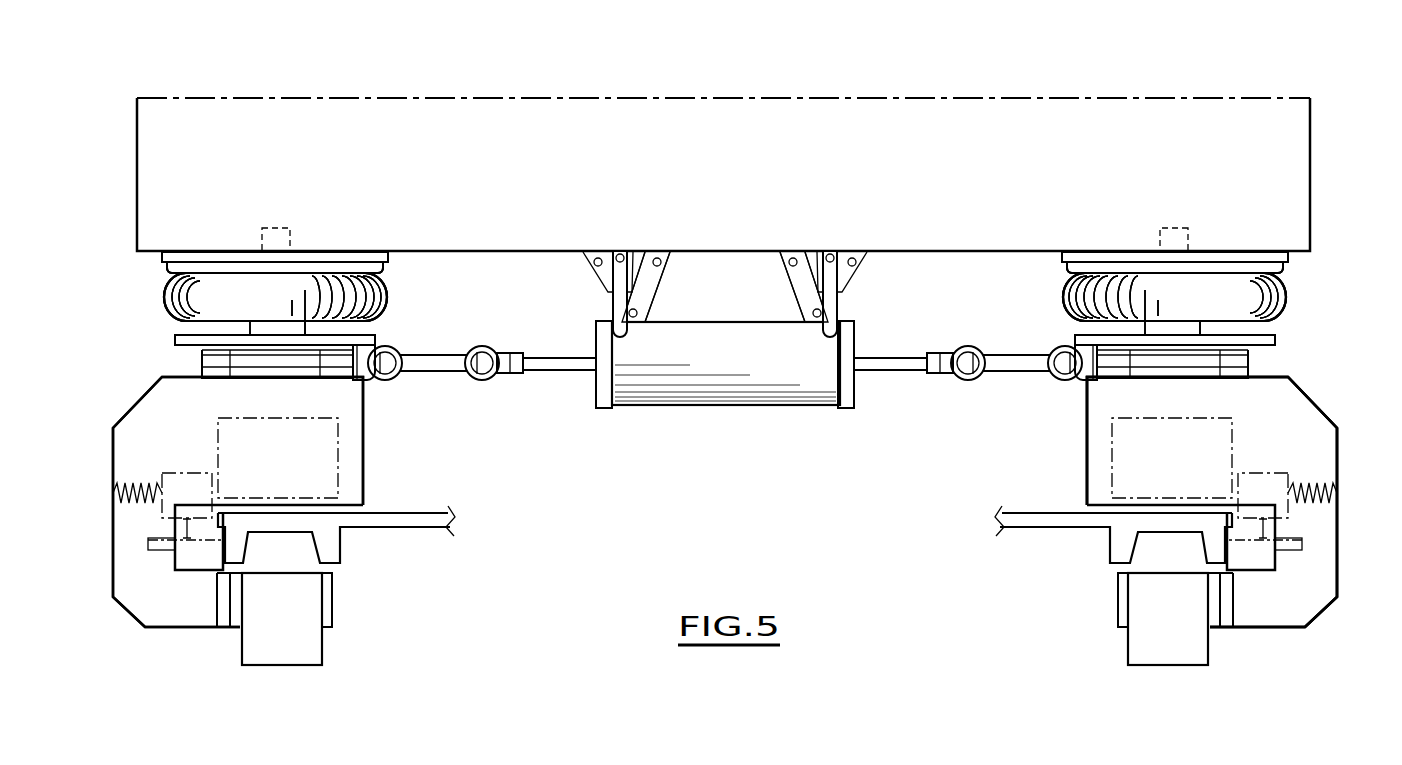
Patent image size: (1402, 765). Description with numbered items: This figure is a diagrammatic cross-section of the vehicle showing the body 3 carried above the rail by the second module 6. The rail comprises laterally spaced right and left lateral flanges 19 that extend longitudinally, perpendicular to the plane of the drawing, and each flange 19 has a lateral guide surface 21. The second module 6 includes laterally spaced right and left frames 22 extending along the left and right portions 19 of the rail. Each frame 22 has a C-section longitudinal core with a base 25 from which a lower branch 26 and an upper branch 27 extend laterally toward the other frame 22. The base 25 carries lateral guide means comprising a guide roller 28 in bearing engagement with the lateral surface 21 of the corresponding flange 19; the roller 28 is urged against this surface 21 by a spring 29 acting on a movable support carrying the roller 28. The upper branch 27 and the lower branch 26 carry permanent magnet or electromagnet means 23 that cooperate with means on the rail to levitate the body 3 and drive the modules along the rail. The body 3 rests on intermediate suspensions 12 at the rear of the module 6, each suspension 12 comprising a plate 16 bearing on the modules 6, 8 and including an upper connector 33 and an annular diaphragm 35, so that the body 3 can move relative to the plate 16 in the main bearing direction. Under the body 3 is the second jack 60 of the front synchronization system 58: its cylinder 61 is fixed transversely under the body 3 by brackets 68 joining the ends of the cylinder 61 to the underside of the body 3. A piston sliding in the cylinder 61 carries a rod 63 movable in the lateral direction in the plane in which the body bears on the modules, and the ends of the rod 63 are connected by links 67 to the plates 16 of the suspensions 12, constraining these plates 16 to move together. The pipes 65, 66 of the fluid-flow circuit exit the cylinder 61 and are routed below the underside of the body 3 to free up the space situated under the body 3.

The body 3 is at (745, 120).
The second module 6 is at (1315, 432).
The module 8 is at (270, 330).
The intermediate suspension 12 is at (158, 296).
The plate 16 is at (365, 343).
The lateral flange 19 is at (380, 525).
The lateral guide surface 21 is at (223, 545).
The frame 22 is at (352, 489).
The permanent magnet or electromagnet means 23 is at (323, 447).
The base 25 is at (133, 552).
The lower branch 26 is at (163, 612).
The upper branch 27 is at (163, 423).
The guide roller 28 is at (158, 548).
The spring 29 is at (150, 490).
The upper connector 33 is at (325, 250).
The annular diaphragm 35 is at (172, 302).
The synchronization system 58 is at (742, 420).
The second jack 60 is at (655, 408).
The cylinder 61 is at (802, 395).
The rod 63 is at (557, 363).
The pipe 65 is at (818, 250).
The pipe 66 is at (635, 250).
The link 67 is at (470, 382).
The bracket 68 is at (648, 302).